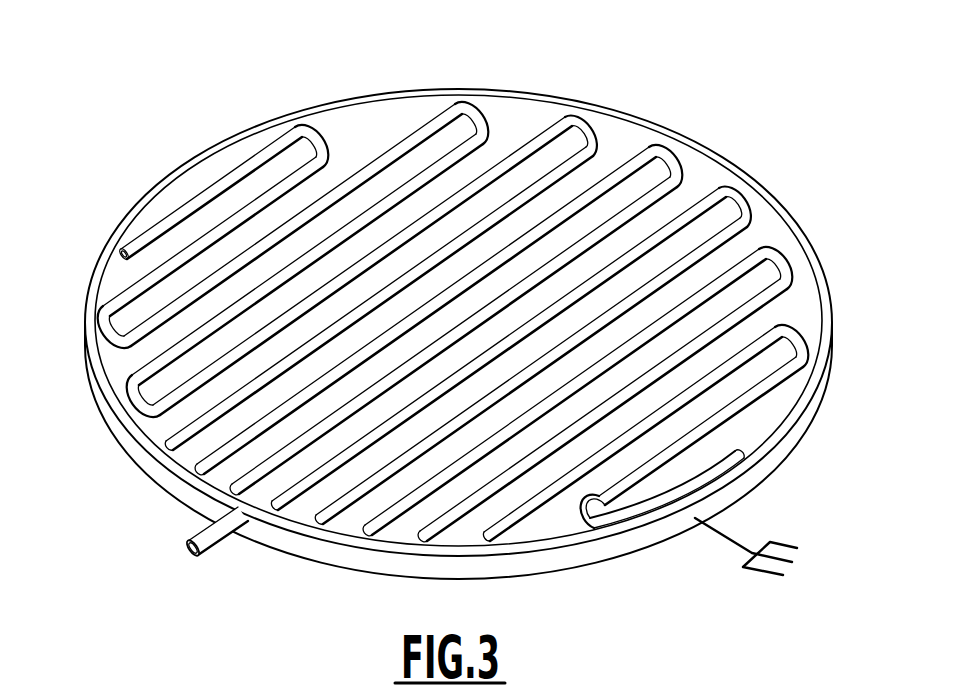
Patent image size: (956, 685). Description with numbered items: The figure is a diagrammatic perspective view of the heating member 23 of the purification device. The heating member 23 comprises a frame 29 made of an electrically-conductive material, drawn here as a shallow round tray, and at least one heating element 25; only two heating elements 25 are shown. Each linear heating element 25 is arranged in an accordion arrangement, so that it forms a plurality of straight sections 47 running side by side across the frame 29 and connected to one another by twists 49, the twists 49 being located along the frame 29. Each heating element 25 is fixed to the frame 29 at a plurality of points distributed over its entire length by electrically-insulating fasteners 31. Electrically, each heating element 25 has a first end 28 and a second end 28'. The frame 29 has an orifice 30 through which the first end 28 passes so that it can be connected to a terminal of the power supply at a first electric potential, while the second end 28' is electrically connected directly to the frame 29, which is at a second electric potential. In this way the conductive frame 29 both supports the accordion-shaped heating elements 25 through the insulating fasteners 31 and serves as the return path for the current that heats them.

The heating member 23 is at (845, 375).
The heating element 25 is at (365, 133).
The first end 28 is at (175, 513).
The second end 28' is at (435, 329).
The frame 29 is at (627, 540).
The orifice 30 is at (195, 554).
The electrically-insulating fasteners 31 is at (583, 133).
The straight sections 47 is at (623, 170).
The twists 49 is at (587, 127).